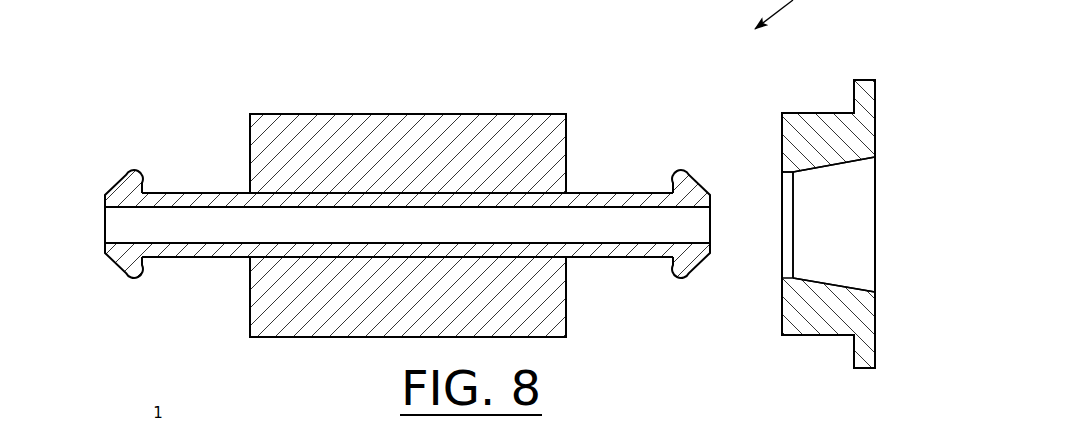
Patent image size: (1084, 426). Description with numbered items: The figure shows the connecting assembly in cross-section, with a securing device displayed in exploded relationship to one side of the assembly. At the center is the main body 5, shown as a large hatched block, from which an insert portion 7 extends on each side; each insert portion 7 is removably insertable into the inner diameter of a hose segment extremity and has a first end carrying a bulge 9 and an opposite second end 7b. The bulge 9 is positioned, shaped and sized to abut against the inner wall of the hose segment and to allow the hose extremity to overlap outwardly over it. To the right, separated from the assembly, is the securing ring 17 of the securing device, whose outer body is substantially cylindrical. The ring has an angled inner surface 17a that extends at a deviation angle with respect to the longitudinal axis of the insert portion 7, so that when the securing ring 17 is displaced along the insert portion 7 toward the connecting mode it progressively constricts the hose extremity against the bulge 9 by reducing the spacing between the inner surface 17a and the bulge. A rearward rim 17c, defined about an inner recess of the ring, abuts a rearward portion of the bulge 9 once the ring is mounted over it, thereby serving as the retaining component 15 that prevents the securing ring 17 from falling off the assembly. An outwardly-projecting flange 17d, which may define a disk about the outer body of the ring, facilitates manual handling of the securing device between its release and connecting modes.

The main body 5 is at (511, 97).
The insert portion 7 is at (168, 169).
The second end 7b is at (780, 241).
The bulge 9 is at (116, 159).
The retaining component 15 is at (779, 172).
The securing ring 17 is at (899, 61).
The inner surface 17a is at (853, 165).
The rim 17c is at (798, 173).
The outwardly-projecting flange 17d is at (877, 339).